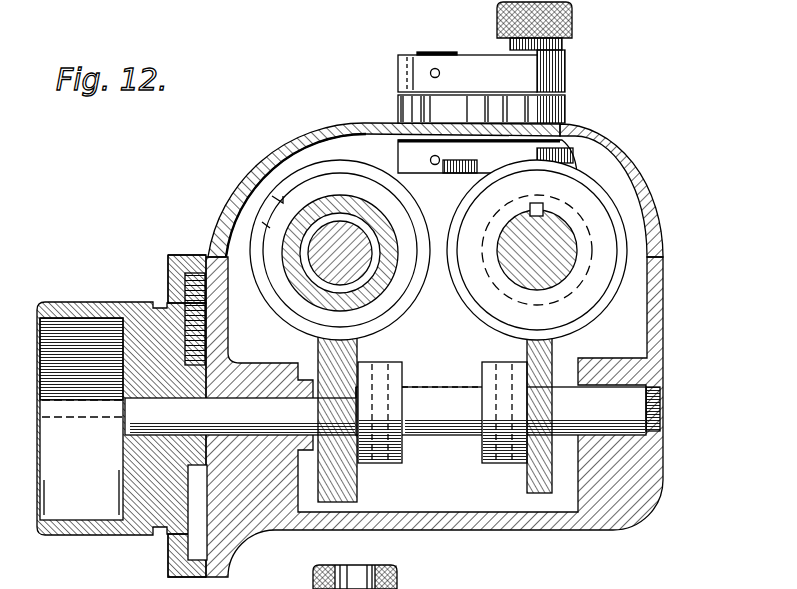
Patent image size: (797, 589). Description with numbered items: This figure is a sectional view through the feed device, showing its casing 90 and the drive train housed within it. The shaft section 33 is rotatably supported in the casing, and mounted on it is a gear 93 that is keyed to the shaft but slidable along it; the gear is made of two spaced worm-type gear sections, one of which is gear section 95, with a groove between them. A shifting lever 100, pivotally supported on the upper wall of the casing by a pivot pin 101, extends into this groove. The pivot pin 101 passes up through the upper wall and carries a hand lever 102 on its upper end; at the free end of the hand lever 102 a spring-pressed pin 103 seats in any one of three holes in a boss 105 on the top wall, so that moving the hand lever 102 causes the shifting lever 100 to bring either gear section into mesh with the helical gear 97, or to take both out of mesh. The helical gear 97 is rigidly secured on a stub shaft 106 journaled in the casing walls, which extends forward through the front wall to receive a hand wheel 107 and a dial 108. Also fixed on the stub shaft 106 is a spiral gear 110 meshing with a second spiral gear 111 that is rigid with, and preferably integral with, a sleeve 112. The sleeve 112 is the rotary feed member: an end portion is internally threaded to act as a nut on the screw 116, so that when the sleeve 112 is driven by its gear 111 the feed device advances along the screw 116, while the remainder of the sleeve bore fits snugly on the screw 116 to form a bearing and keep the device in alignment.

The casing 90 is at (637, 487).
The gear 93 is at (612, 308).
The gear section 95 is at (610, 238).
The shaft section 33 is at (558, 235).
The helical gear 97 is at (527, 481).
The shifting lever 100 is at (492, 152).
The pivot pin 101 is at (437, 53).
The hand lever 102 is at (547, 68).
The boss 105 is at (550, 105).
The stub shaft 106 is at (432, 397).
The hand wheel 107 is at (80, 300).
The dial 108 is at (180, 253).
The spiral gear 110 is at (357, 487).
The spiral gear 111 is at (285, 200).
The sleeve 112 is at (320, 207).
The screw 116 is at (352, 230).
The spring-pressed pin 103 is at (397, 585).